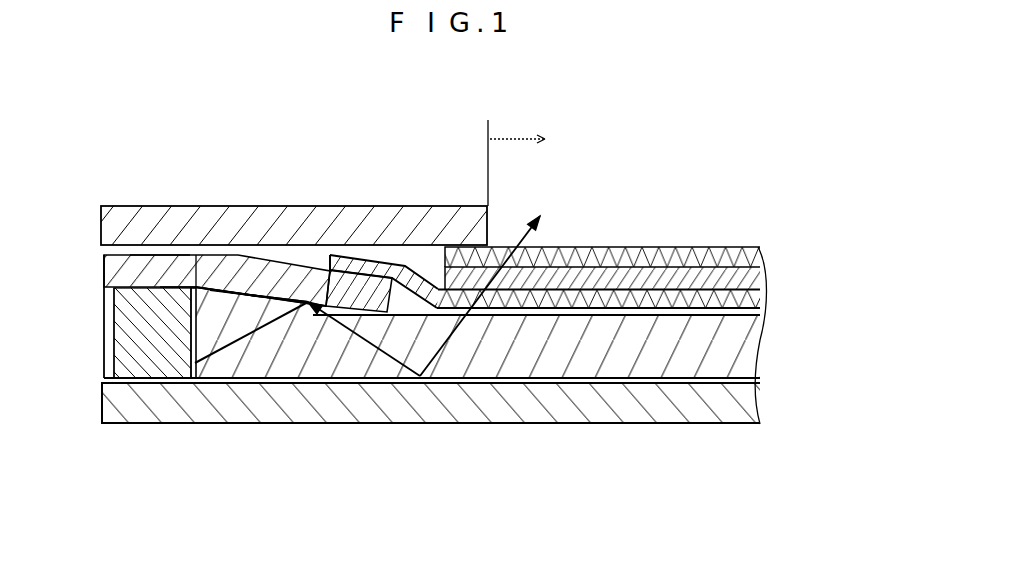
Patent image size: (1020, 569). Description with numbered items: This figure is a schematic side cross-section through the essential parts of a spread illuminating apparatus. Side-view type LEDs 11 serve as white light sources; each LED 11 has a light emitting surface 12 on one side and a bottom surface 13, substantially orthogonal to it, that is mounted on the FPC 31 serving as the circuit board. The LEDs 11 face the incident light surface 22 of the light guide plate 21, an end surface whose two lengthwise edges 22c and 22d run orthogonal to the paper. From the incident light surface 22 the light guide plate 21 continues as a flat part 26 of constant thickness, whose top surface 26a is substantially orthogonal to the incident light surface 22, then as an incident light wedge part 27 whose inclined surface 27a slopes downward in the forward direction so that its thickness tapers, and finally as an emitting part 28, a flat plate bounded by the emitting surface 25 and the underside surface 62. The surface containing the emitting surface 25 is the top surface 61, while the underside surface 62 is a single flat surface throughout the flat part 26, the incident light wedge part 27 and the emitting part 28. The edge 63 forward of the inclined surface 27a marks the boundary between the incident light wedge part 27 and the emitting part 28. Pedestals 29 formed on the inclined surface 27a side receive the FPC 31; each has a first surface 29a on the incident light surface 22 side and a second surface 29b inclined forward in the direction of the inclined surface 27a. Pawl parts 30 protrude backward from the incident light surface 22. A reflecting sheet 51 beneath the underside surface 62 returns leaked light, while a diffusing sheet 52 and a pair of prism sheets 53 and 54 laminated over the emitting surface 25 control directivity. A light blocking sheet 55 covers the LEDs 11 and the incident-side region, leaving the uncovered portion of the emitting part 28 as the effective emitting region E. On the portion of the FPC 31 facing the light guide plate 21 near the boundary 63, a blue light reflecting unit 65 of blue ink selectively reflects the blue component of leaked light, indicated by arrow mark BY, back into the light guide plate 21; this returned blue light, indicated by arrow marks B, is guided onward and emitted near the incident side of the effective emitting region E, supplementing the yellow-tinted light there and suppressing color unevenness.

The LED 11 is at (150, 335).
The light emitting surface 12 is at (197, 372).
The bottom surface 13 is at (157, 283).
The light guide plate 21 is at (745, 345).
The incident light surface 22 is at (182, 330).
The edge 22c is at (195, 288).
The edge 22d is at (190, 380).
The emitting surface 25 is at (572, 317).
The flat part 26 is at (245, 322).
The top surface 26a is at (203, 288).
The incident light wedge part 27 is at (303, 315).
The inclined surface 27a is at (297, 292).
The emitting part 28 is at (558, 335).
The pedestal 29 is at (345, 270).
The first surface 29a is at (222, 268).
The second surface 29b is at (296, 262).
The pawl part 30 is at (105, 333).
The FPC 31 is at (120, 270).
The reflecting sheet 51 is at (622, 397).
The diffusing sheet 52 is at (750, 298).
The prism sheet 53 is at (750, 278).
The prism sheet 54 is at (745, 257).
The light blocking sheet 55 is at (417, 227).
The top surface 61 is at (673, 314).
The underside surface 62 is at (681, 382).
The boundary 63 is at (372, 335).
The blue light reflecting unit 65 is at (268, 335).
The light beam B is at (420, 382).
The arrow mark BY is at (288, 335).
The effective emitting region E is at (516, 159).